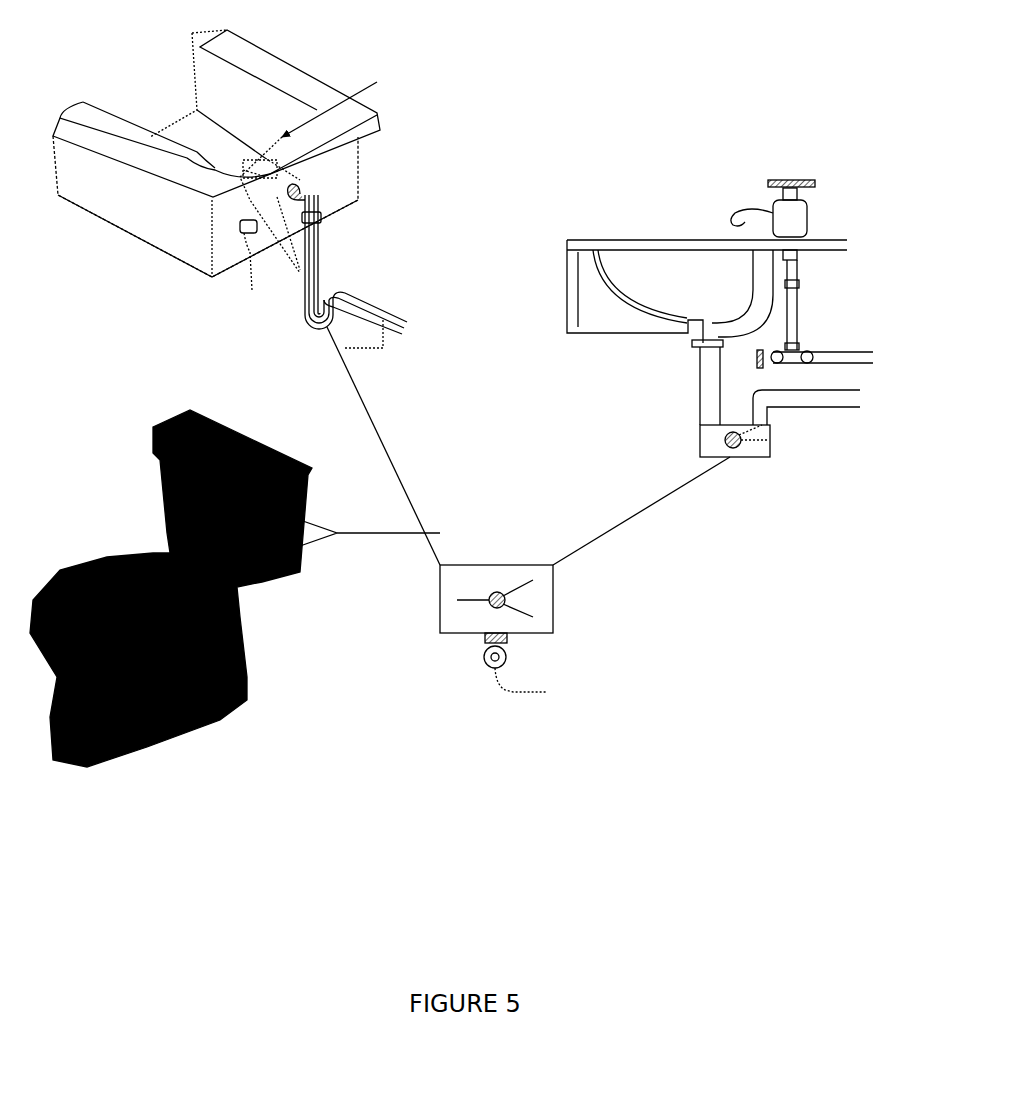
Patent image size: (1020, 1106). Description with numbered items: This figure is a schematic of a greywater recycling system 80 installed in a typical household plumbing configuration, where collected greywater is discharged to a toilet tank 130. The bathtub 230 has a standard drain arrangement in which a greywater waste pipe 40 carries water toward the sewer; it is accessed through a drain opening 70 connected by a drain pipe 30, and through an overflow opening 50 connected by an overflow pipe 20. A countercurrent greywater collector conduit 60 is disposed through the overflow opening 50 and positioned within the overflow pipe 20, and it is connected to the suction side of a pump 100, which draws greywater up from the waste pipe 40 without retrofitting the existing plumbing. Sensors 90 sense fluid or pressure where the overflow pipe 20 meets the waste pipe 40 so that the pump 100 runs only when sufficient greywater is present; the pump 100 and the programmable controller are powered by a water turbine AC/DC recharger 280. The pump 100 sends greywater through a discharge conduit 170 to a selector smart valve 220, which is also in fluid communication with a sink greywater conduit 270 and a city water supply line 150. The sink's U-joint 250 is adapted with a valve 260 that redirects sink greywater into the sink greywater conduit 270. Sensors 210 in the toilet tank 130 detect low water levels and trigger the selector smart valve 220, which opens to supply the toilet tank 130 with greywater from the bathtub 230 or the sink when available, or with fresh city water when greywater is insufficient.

The overflow pipe 20 is at (330, 193).
The drain pipe 30 is at (253, 258).
The greywater waste pipe 40 is at (350, 339).
The overflow opening 50 is at (241, 175).
The countercurrent greywater collector conduit 60 is at (325, 285).
The drain opening 70 is at (230, 225).
The system 80 is at (298, 114).
The sensors 90 is at (322, 262).
The pump 100 is at (250, 188).
The toilet tank 130 is at (167, 513).
The city water supply line 150 is at (513, 698).
The discharge conduit 170 is at (345, 388).
The sensors 210 is at (357, 540).
The selector smart valve 220 is at (560, 600).
The bathtub 230 is at (195, 245).
The U-joint 250 is at (778, 420).
The valve 260 is at (778, 440).
The sink greywater conduit 270 is at (652, 514).
The water turbine AC/DC recharger 280 is at (322, 238).